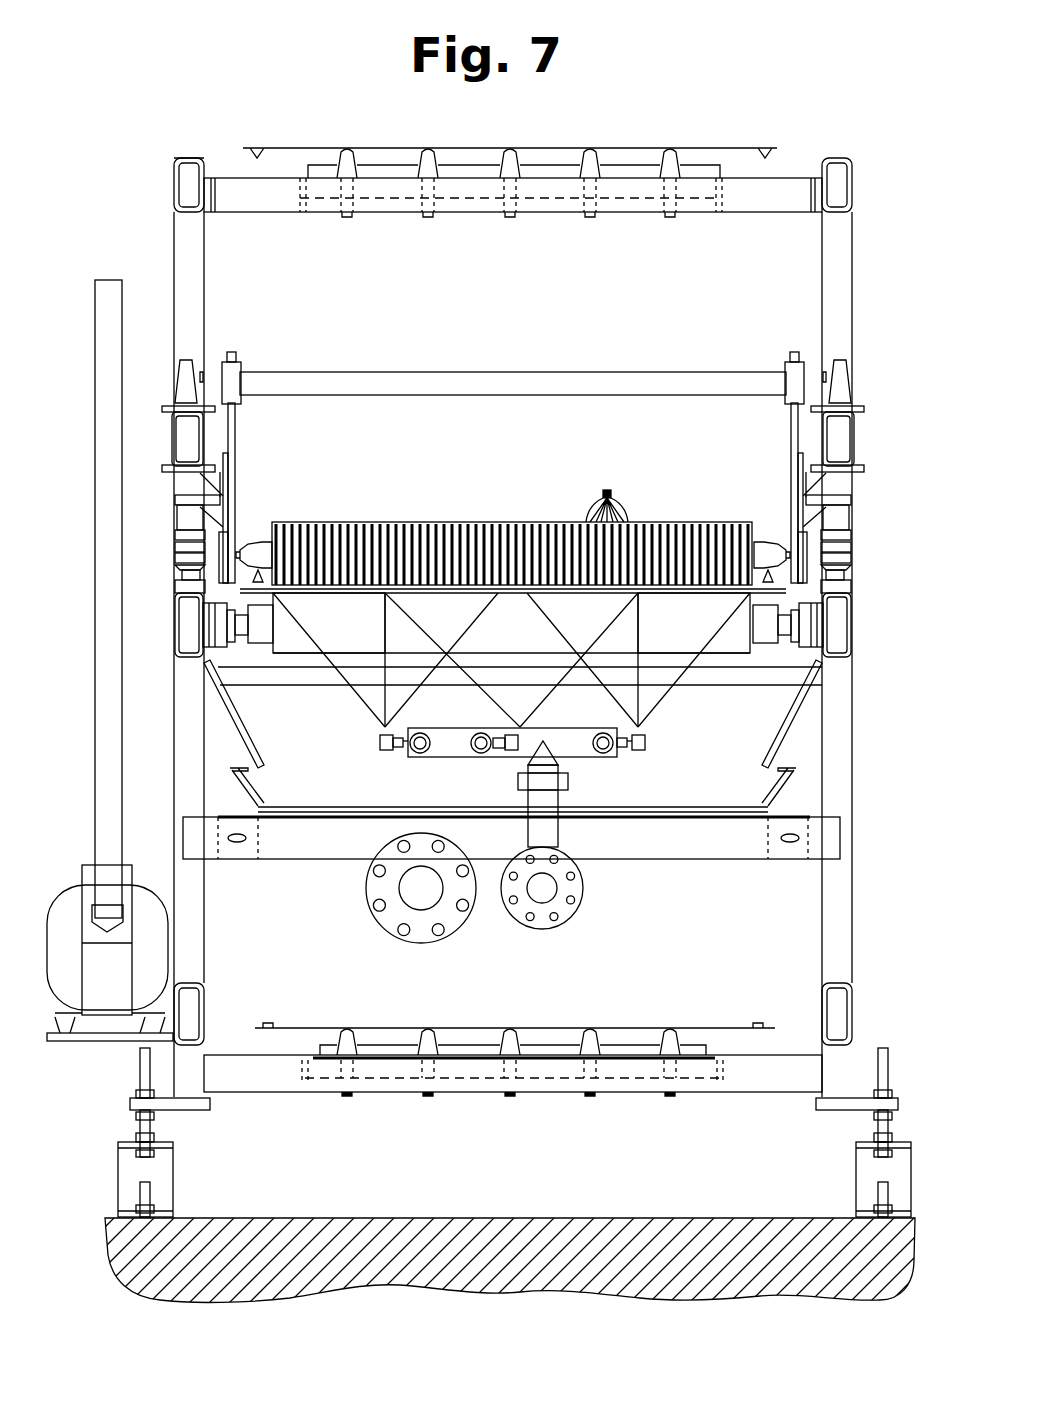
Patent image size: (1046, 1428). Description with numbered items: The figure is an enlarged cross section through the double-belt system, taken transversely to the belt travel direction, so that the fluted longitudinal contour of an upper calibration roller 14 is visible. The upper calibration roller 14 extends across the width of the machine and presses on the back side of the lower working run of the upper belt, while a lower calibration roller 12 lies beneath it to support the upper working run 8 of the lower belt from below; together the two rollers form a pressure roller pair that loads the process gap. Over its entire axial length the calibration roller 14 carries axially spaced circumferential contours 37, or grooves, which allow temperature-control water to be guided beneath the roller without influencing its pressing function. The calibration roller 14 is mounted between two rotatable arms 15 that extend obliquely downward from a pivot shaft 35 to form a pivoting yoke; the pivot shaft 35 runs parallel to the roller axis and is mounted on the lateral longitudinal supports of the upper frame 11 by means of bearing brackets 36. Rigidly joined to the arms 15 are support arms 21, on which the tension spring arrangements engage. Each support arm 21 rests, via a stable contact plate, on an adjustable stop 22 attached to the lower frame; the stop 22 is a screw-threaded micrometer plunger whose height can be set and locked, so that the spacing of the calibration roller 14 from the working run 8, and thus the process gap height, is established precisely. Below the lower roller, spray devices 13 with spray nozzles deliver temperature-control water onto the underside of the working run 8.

The upper working run 8 is at (235, 592).
The upper frame 11 is at (186, 442).
The calibration roller 12 is at (290, 645).
The spray device 13 is at (513, 845).
The calibration roller 14 is at (433, 512).
The arm 15 is at (236, 440).
The support arm 21 is at (190, 500).
The adjustable stop 22 is at (178, 541).
The pivot shaft 35 is at (527, 372).
The bearing bracket 36 is at (208, 366).
The circumferential contour 37 is at (607, 493).